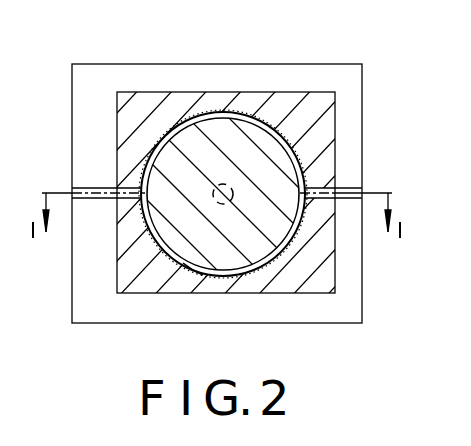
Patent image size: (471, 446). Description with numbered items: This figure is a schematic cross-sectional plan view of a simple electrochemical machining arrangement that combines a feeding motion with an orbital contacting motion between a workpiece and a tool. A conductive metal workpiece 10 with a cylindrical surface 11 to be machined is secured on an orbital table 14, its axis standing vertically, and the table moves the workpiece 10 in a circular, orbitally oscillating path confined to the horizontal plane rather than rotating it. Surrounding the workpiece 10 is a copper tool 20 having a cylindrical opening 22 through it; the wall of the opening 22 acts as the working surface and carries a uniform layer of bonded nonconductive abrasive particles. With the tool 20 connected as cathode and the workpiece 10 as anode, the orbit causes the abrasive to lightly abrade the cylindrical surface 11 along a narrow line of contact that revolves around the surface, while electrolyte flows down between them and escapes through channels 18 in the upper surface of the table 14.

The workpiece 10 is at (255, 162).
The cylindrical surface 11 is at (183, 263).
The orbital table 14 is at (80, 114).
The channels 18 is at (97, 187).
The tool 20 is at (156, 118).
The cylindrical opening 22 is at (227, 111).